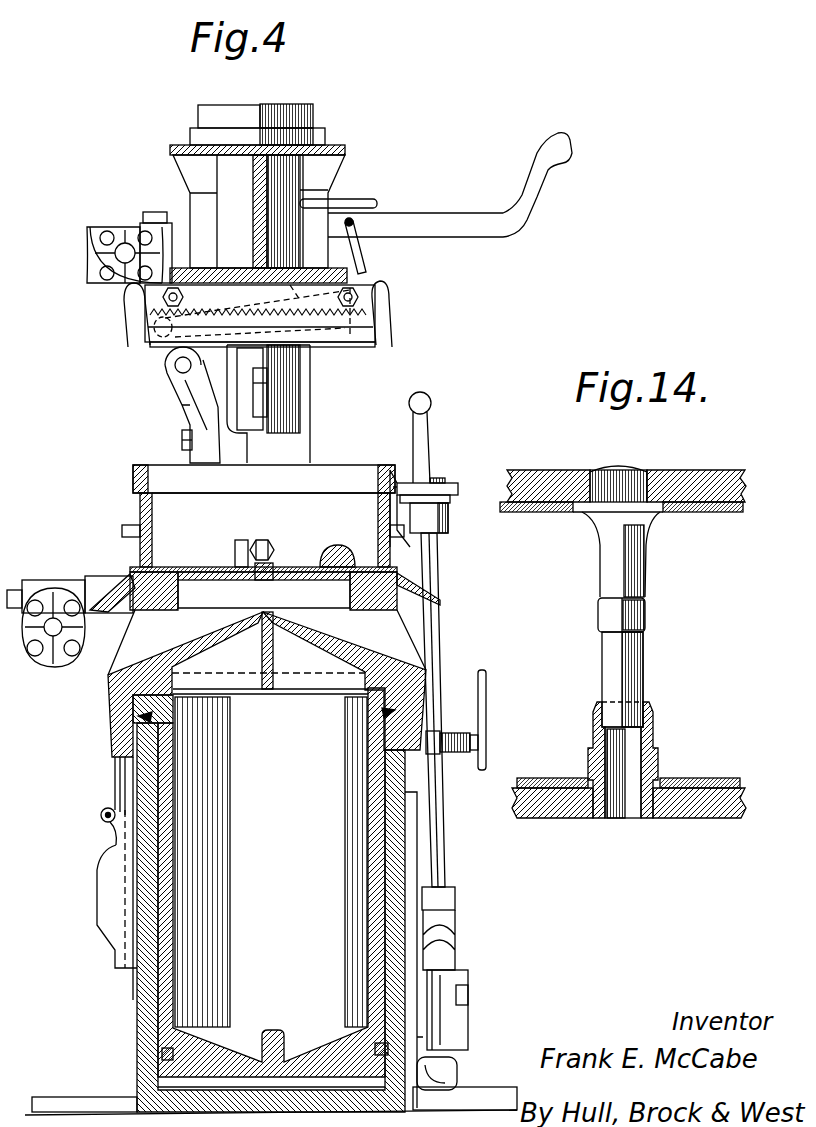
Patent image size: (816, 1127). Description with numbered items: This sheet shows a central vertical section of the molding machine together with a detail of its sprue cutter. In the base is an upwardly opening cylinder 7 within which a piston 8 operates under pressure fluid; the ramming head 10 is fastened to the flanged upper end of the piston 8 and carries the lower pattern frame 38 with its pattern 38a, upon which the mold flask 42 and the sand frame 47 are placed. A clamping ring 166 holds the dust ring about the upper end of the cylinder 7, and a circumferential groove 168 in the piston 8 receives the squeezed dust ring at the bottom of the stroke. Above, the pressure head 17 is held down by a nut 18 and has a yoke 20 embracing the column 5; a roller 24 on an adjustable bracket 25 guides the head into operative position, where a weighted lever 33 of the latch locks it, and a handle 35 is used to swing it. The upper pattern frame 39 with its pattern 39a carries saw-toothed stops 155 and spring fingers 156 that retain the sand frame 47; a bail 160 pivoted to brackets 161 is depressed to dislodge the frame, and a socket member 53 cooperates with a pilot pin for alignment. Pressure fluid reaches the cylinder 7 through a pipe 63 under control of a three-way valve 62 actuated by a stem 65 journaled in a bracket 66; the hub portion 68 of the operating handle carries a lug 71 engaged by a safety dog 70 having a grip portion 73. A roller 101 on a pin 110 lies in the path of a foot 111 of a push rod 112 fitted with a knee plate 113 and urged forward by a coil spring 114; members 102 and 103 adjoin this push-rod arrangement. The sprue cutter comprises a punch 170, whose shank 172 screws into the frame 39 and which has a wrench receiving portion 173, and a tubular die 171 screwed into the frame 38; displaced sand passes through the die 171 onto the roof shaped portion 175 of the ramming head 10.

In FIG. 4, the column 5 is at (300, 438).
In FIG. 4, the cylinder 7 is at (143, 1022).
In FIG. 4, the piston 8 is at (165, 828).
In FIG. 4, the ramming head 10 is at (430, 632).
In FIG. 4, the pressure head 17 is at (345, 150).
In FIG. 4, the nut 18 is at (310, 122).
In FIG. 4, the yoke 20 is at (188, 210).
In FIG. 4, the roller 24 is at (165, 366).
In FIG. 4, the bracket 25 is at (185, 393).
In FIG. 4, the lever 33 is at (448, 216).
In FIG. 4, the handle 35 is at (362, 199).
In FIG. 4, the pattern frame 38 is at (132, 572).
In FIG. 14, the pattern frame 38 is at (567, 820).
In FIG. 4, the pattern 38a is at (198, 567).
In FIG. 14, the pattern 38a is at (726, 781).
In FIG. 4, the pattern frame 39 is at (372, 327).
In FIG. 14, the pattern frame 39 is at (738, 470).
In FIG. 4, the pattern 39a is at (368, 343).
In FIG. 14, the pattern 39a is at (545, 512).
In FIG. 4, the mold flask 42 is at (150, 513).
In FIG. 4, the sand frame 47 is at (163, 473).
In FIG. 4, the socket member 53 is at (300, 380).
In FIG. 4, the valve 62 is at (458, 929).
In FIG. 4, the pipe 63 is at (470, 1006).
In FIG. 4, the stem 65 is at (445, 826).
In FIG. 4, the bracket 66 is at (448, 523).
In FIG. 4, the hub portion 68 is at (458, 486).
In FIG. 4, the dog 70 is at (408, 470).
In FIG. 4, the lug 71 is at (436, 478).
In FIG. 4, the grip portion 73 is at (428, 428).
In FIG. 4, the roller 101 is at (101, 814).
In FIG. 4, the bracket 102 is at (97, 908).
In FIG. 4, the wall 103 is at (127, 788).
In FIG. 4, the pin 110 is at (108, 822).
In FIG. 4, the foot 111 is at (112, 758).
In FIG. 4, the push rod 112 is at (452, 735).
In FIG. 4, the knee plate 113 is at (488, 720).
In FIG. 4, the coil spring 114 is at (461, 752).
In FIG. 4, the stops 155 is at (352, 297).
In FIG. 4, the spring fingers 156 is at (126, 303).
In FIG. 4, the bail 160 is at (367, 262).
In FIG. 4, the brackets 161 is at (155, 327).
In FIG. 4, the clamping ring 166 is at (140, 720).
In FIG. 4, the circumferential groove 168 is at (150, 713).
In FIG. 4, the punch 170 is at (275, 404).
In FIG. 14, the punch 170 is at (650, 572).
In FIG. 4, the tubular die 171 is at (270, 538).
In FIG. 14, the tubular die 171 is at (660, 745).
In FIG. 14, the shank 172 is at (648, 472).
In FIG. 14, the wrench receiving portion 173 is at (599, 630).
In FIG. 4, the roof shaped portion 175 is at (325, 633).